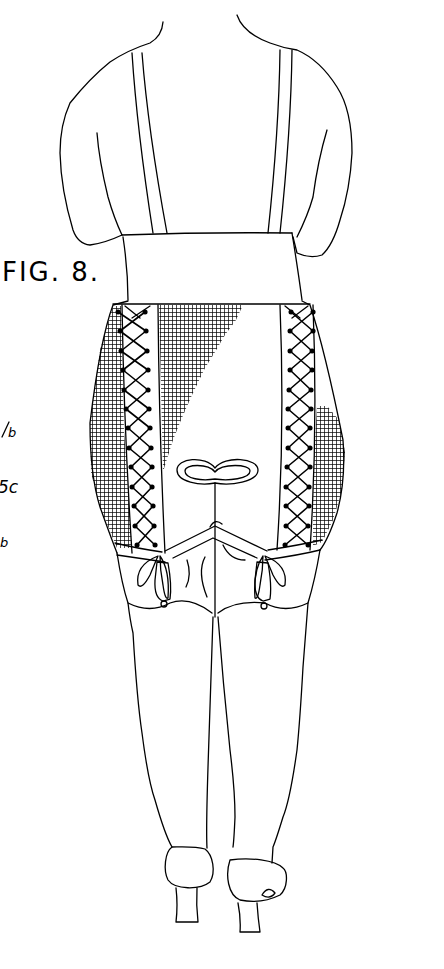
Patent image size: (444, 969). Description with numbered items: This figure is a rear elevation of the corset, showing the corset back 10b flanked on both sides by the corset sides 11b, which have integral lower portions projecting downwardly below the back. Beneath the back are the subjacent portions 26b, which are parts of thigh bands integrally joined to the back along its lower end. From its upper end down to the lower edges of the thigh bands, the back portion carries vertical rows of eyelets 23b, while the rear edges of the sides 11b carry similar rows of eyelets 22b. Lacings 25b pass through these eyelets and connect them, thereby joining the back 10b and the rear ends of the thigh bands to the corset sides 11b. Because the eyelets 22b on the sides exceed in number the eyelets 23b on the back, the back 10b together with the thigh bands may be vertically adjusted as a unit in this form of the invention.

The corset back 10b is at (166, 426).
The corset sides 11b is at (330, 468).
The eyelets of the sides 22b is at (320, 413).
The eyelets of the back 23b is at (103, 532).
The lacings 25b is at (146, 388).
The subjacent portions of the thigh bands 26b is at (212, 568).